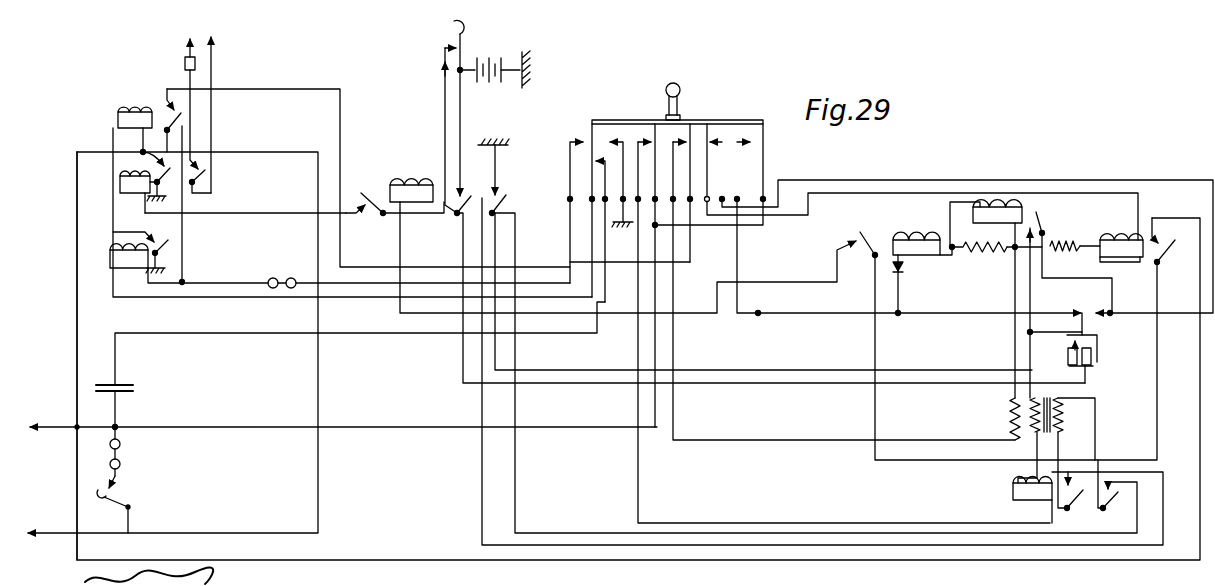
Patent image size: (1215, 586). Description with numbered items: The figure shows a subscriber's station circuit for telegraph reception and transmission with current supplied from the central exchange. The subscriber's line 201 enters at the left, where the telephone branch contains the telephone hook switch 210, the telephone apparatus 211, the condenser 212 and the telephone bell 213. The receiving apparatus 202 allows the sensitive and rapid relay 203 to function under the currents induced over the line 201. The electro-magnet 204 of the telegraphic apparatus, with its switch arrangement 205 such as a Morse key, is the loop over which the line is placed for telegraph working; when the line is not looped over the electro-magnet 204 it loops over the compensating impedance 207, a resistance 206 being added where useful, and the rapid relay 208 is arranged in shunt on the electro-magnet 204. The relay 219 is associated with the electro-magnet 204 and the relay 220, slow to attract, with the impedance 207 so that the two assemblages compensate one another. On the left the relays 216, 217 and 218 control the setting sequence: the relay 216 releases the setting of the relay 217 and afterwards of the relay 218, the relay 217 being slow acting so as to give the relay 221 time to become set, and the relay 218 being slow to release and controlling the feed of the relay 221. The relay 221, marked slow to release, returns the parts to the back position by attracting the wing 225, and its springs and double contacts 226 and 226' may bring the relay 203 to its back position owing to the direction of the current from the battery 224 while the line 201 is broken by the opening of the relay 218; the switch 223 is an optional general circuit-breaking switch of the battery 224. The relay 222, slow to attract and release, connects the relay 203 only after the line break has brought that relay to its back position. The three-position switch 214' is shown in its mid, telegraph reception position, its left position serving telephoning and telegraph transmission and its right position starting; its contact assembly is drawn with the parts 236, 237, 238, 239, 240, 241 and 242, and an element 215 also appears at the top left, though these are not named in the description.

The subscriber's line 201 is at (41, 356).
The receiving apparatus 202 is at (1060, 415).
The sensitive and rapid relay 203 is at (1098, 359).
The electro-magnet of the telegraphic apparatus 204 is at (979, 260).
The switch arrangement of the telegraphic apparatus 205 is at (915, 272).
The resistance 206 is at (997, 419).
The compensating impedance 207 is at (1055, 231).
The rapid relay 208 is at (984, 205).
The telephone hook switch 210 is at (131, 504).
The telephone apparatus 211 is at (133, 451).
The condenser 212 is at (132, 402).
The telephone bell 213 is at (278, 272).
The three-position switch 214' is at (692, 101).
The lamp 215 is at (167, 55).
The relay 216 is at (175, 257).
The relay 217 is at (145, 182).
The relay 218 is at (139, 120).
The relay 219 is at (906, 239).
The relay 220 is at (1130, 241).
The relay 221 is at (402, 167).
The relay 222 is at (978, 497).
The switch 223 is at (433, 110).
The battery 224 is at (494, 57).
The wing 225 is at (364, 219).
The springs and double contacts 226 is at (435, 224).
The springs and double contacts 226' is at (517, 189).
The key contact 236 is at (579, 138).
The key 237 is at (598, 140).
The key contact 238 is at (603, 166).
The key contact 239 is at (758, 147).
The key contact 240 is at (712, 139).
The key contact 241 is at (650, 138).
The key contact 242 is at (703, 136).